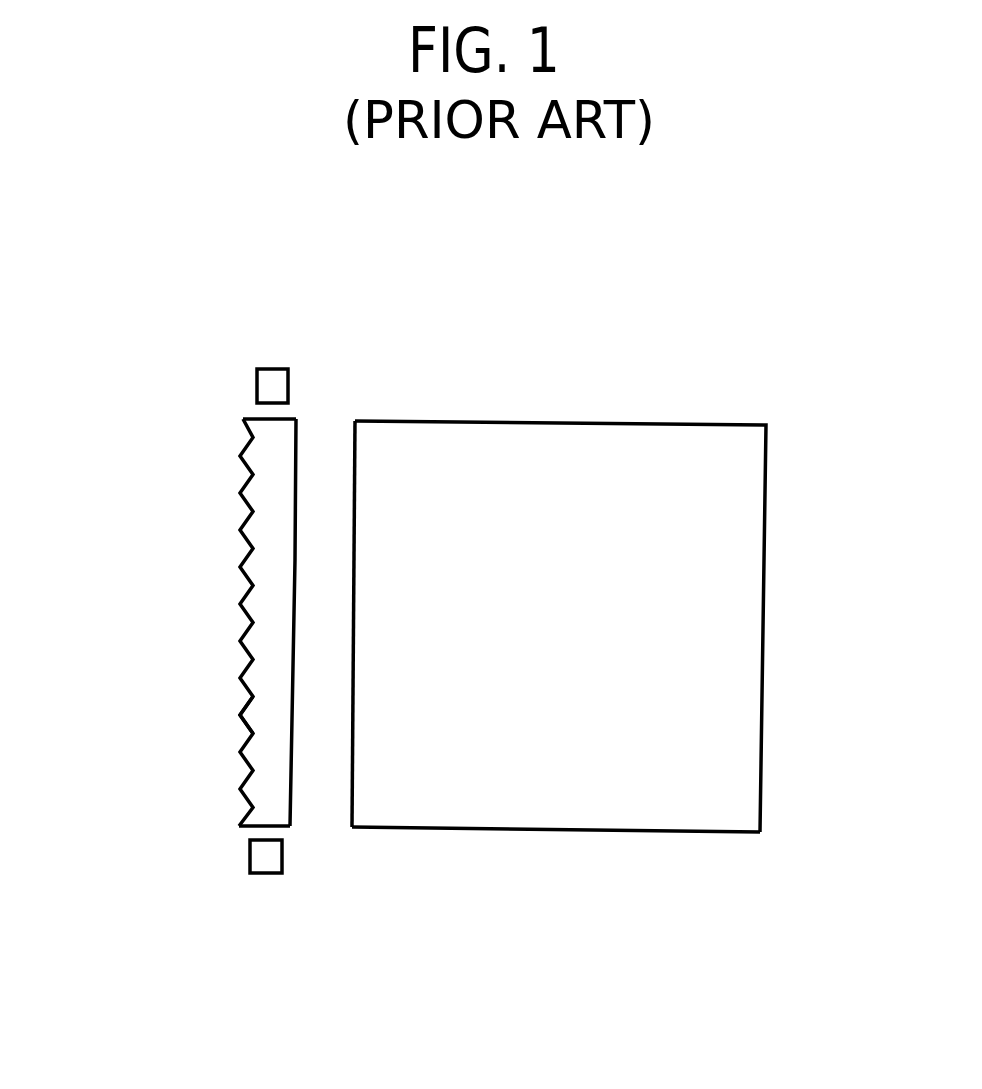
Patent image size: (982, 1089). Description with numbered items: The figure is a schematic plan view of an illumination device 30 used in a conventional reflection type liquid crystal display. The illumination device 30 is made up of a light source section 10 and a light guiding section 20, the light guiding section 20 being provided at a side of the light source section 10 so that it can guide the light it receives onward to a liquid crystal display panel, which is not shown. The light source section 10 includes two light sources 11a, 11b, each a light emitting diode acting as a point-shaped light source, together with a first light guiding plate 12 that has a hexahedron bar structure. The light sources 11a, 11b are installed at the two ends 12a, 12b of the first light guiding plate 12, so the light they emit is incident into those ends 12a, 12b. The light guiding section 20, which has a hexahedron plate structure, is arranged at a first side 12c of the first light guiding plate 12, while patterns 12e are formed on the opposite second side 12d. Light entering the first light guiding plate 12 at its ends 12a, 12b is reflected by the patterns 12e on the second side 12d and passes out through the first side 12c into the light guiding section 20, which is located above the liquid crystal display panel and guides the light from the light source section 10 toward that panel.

The light source section 10 is at (127, 471).
The light source 11a is at (277, 384).
The light source 11b is at (275, 873).
The first light guiding plate 12 is at (252, 642).
The end of first light guiding plate 12a is at (248, 411).
The end of first light guiding plate 12b is at (241, 828).
The first side of first light guiding plate 12c is at (297, 754).
The second side of first light guiding plate 12d is at (231, 587).
The patterns 12e is at (240, 716).
The light guiding section 20 is at (733, 820).
The illumination device 30 is at (755, 377).